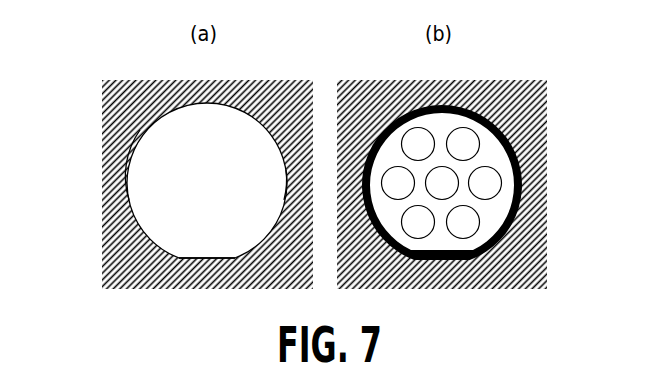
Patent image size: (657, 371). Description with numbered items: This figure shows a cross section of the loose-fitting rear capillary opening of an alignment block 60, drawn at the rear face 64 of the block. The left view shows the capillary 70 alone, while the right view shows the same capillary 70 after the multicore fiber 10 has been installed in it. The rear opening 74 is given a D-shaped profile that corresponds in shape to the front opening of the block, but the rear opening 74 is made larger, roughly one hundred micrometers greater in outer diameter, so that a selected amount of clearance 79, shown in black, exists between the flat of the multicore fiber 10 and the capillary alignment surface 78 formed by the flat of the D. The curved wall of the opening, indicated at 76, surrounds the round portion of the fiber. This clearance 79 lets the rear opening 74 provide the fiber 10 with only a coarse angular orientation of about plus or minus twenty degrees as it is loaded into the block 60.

The multicore fiber (MCF) 10 is at (497, 160).
The alignment block 60 is at (323, 168).
The rear face 64 is at (115, 110).
The capillary 70 is at (190, 158).
The rear opening 74 is at (127, 184).
The curved surface of hole 76 is at (279, 186).
The capillary alignment surface 78 is at (203, 248).
The clearance 79 is at (515, 217).